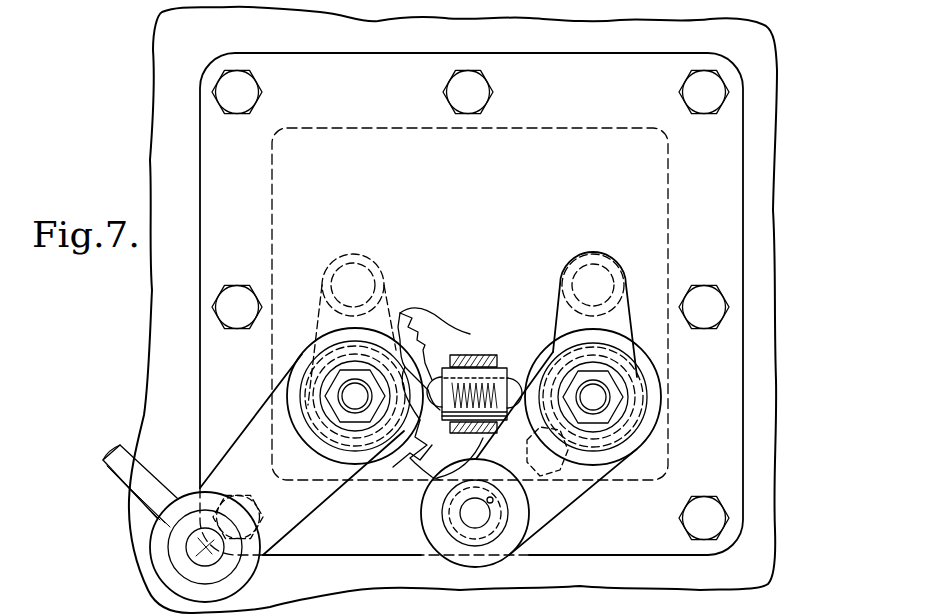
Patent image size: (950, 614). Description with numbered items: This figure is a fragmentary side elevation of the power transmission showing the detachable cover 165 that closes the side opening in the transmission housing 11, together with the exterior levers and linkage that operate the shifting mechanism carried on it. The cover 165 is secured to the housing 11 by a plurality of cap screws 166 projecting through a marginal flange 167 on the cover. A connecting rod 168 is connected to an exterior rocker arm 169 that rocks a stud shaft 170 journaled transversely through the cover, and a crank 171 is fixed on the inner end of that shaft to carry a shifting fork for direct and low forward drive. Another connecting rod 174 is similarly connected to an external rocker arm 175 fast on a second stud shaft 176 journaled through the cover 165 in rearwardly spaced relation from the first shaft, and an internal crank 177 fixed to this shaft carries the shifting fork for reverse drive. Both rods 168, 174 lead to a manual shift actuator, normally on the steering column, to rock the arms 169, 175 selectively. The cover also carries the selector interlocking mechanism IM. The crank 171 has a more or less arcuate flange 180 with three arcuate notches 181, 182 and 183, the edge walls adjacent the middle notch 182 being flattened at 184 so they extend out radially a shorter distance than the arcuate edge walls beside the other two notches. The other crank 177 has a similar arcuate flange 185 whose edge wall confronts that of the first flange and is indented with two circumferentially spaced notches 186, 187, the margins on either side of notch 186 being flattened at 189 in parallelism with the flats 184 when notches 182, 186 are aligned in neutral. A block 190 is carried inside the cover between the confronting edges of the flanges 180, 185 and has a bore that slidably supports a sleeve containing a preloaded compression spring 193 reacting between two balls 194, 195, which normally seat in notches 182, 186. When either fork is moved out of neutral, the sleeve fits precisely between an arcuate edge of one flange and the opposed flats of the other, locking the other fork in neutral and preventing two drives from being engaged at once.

The transmission housing T is at (149, 79).
The transmission housing 11 is at (374, 25).
The detachable cover 165 is at (213, 155).
The cap screws 166 is at (227, 96).
The marginal flange 167 is at (200, 270).
The connecting rod 168 is at (123, 460).
The exterior rocker arm 169 is at (277, 522).
The stud shaft 170 is at (350, 396).
The crank 171 is at (320, 318).
The connecting rod 174 is at (415, 482).
The external rocker arm 175 is at (533, 495).
The stud shaft 176 is at (597, 400).
The internal crank 177 is at (626, 296).
The arcuate flange 180 is at (394, 335).
The arcuate notch 181 is at (410, 322).
The arcuate notch 182 is at (426, 350).
The arcuate notch 183 is at (430, 432).
The flattened edge wall portions 184 is at (453, 353).
The arcuate flange 185 is at (509, 366).
The arcuate notch 186 is at (520, 395).
The arcuate notch 187 is at (556, 432).
The flattened marginal edge portions 189 is at (505, 366).
The block 190 is at (483, 438).
The compression spring 193 is at (500, 356).
The ball 194 is at (484, 355).
The ball 195 is at (522, 385).
The selector interlocking mechanism IM is at (509, 404).